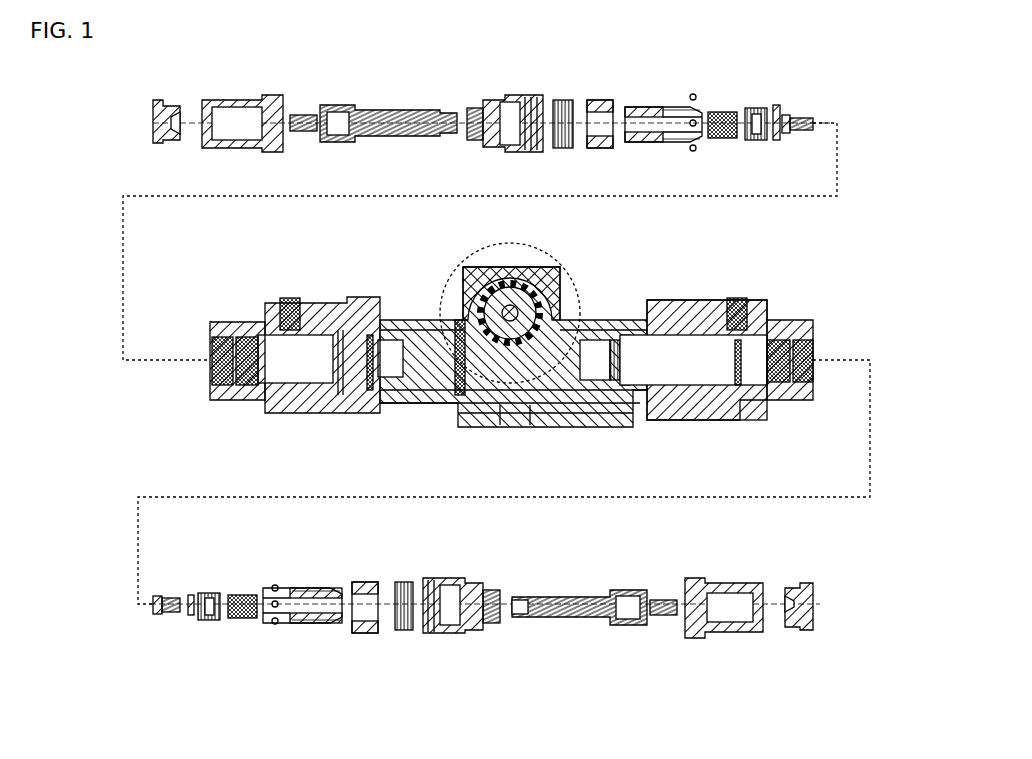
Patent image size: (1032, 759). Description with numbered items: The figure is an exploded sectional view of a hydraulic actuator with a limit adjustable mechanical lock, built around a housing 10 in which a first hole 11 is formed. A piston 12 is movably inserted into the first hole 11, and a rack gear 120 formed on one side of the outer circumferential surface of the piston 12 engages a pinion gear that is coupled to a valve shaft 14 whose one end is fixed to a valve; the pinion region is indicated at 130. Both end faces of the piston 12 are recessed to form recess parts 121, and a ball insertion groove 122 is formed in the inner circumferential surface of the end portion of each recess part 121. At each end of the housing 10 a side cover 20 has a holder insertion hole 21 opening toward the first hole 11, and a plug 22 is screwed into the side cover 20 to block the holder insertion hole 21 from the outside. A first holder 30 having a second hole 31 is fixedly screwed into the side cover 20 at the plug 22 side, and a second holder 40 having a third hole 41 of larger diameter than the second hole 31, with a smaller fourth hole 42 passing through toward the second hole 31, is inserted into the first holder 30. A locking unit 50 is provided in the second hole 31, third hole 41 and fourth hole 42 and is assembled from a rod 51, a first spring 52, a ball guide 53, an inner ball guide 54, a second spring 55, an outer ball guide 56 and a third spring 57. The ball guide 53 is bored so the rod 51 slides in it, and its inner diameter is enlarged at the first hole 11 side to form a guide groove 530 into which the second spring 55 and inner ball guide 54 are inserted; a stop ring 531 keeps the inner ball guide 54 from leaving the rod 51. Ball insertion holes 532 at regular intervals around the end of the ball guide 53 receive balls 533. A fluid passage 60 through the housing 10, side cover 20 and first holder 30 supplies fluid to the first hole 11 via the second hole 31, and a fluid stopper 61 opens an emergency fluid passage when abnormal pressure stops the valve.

The housing 10 is at (408, 322).
The first hole 11 is at (640, 392).
The piston 12 is at (568, 330).
The valve shaft 14 is at (527, 300).
The side cover 20 is at (262, 400).
The holder insertion hole 21 is at (320, 413).
The plug 22 is at (165, 143).
The first holder 30 is at (245, 151).
The second hole 31 is at (230, 128).
The second holder 40 is at (497, 152).
The third hole 41 is at (510, 110).
The fourth hole 42 is at (470, 118).
The locking unit 50 is at (800, 110).
The rod 51 is at (390, 128).
The first spring 52 is at (303, 115).
The ball guide 53 is at (650, 107).
The inner ball guide 54 is at (756, 108).
The second spring 55 is at (720, 112).
The outer ball guide 56 is at (600, 100).
The third spring 57 is at (565, 100).
The fluid passage 60 is at (370, 396).
The fluid stopper 61 is at (290, 298).
The rack gear 120 is at (458, 330).
The recess part 121 is at (600, 340).
The ball insertion groove 122 is at (628, 340).
The gear housing 130 is at (492, 300).
The guide groove 530 is at (660, 136).
The stop ring 531 is at (778, 105).
The ball insertion holes 532 is at (697, 147).
The balls 533 is at (693, 94).